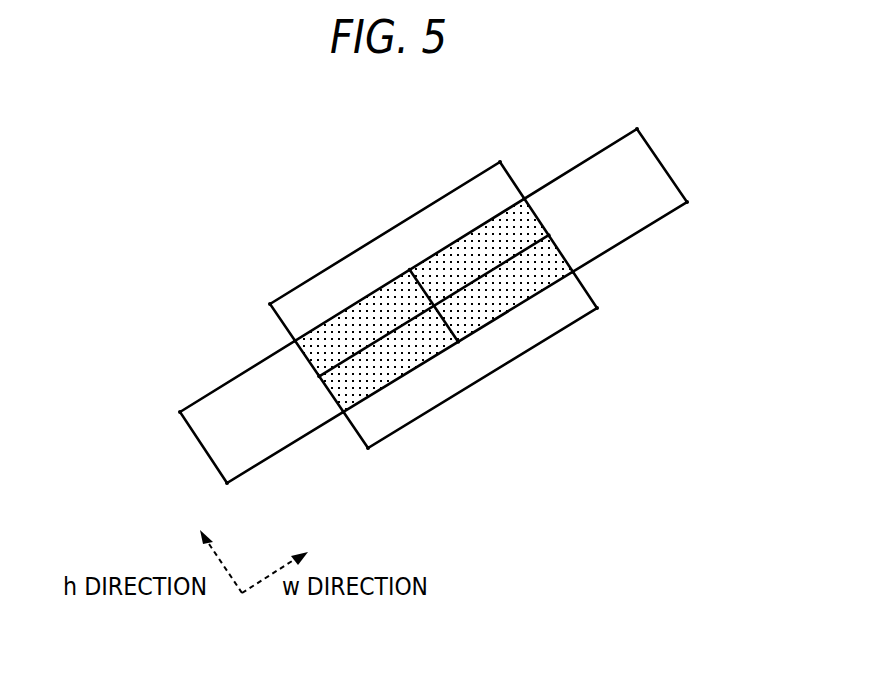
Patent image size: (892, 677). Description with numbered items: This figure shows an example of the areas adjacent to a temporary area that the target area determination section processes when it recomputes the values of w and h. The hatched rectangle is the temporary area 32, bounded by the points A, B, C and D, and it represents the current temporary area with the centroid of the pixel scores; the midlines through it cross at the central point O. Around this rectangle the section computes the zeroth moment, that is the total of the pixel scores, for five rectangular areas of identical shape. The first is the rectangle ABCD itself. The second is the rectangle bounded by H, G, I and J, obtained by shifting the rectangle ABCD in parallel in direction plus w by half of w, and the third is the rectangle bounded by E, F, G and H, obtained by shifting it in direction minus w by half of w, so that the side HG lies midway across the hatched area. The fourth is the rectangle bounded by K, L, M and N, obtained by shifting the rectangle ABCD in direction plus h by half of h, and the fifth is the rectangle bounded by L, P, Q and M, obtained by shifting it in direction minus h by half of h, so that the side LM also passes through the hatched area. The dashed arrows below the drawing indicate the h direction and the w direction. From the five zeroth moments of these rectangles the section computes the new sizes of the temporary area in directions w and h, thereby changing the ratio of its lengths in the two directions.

The temporary area 32 is at (525, 302).
The point O is at (433, 305).
The point K is at (259, 301).
The point A is at (278, 337).
The point L is at (308, 386).
The point B is at (342, 433).
The point P is at (367, 463).
The point E is at (167, 413).
The point F is at (228, 498).
The point N is at (500, 149).
The point D is at (529, 184).
The point M is at (562, 229).
The point C is at (588, 278).
The point Q is at (609, 316).
The point J is at (636, 115).
The point I is at (697, 206).
The point H is at (405, 254).
The point G is at (465, 357).